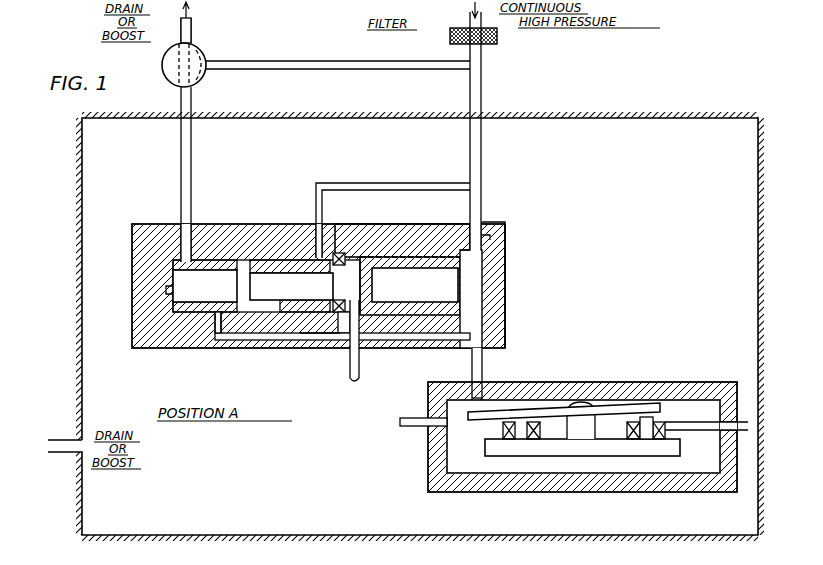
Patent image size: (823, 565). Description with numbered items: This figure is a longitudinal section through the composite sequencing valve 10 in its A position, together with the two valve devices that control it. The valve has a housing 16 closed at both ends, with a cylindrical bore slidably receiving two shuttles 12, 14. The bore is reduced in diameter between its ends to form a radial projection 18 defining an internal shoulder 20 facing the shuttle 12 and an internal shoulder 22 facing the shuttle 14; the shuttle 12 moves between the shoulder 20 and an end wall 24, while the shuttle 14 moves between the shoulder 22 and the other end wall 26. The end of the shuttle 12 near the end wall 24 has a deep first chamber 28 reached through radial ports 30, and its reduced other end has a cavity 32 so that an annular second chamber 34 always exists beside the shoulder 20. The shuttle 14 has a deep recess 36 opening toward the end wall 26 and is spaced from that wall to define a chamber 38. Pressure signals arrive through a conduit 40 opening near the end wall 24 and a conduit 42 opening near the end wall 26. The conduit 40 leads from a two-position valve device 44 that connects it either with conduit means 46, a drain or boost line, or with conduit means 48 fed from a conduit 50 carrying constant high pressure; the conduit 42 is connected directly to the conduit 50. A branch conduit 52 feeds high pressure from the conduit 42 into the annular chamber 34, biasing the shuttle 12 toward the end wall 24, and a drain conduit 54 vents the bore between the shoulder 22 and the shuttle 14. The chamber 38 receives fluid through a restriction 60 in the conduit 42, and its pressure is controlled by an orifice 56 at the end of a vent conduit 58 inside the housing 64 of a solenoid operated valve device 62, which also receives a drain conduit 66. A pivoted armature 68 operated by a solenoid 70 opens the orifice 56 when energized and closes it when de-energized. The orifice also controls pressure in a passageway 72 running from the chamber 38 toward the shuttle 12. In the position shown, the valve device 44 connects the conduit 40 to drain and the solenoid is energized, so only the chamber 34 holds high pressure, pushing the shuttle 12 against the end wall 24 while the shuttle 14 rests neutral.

The composite control valve 10 is at (522, 234).
The shuttle 12 is at (248, 250).
The shuttle 14 is at (390, 252).
The housing 16 is at (506, 280).
The radial projection 18 is at (343, 320).
The internal shoulder 20 is at (302, 337).
The internal shoulder 22 is at (350, 310).
The end wall 24 is at (170, 290).
The end wall 26 is at (470, 300).
The first chamber 28 is at (232, 258).
The radial ports 30 is at (205, 286).
The cavity 32 is at (291, 286).
The second chamber 34 is at (336, 252).
The recess 36 is at (410, 286).
The chamber 38 is at (506, 250).
The conduit 40 is at (192, 160).
The conduit 42 is at (482, 130).
The two-position valve device 44 is at (167, 80).
The conduit means 46 is at (192, 30).
The conduit means 48 is at (248, 70).
The conduit 50 is at (470, 28).
The branch conduit 52 is at (330, 188).
The drain conduit 54 is at (360, 376).
The orifice 56 is at (472, 396).
The vent conduit 58 is at (484, 352).
The restriction 60 is at (482, 238).
The solenoid operated valve device 62 is at (570, 380).
The housing 64 is at (616, 380).
The drain conduit 66 is at (402, 428).
The armature 68 is at (670, 400).
The solenoid 70 is at (668, 420).
The passageway 72 is at (232, 338).